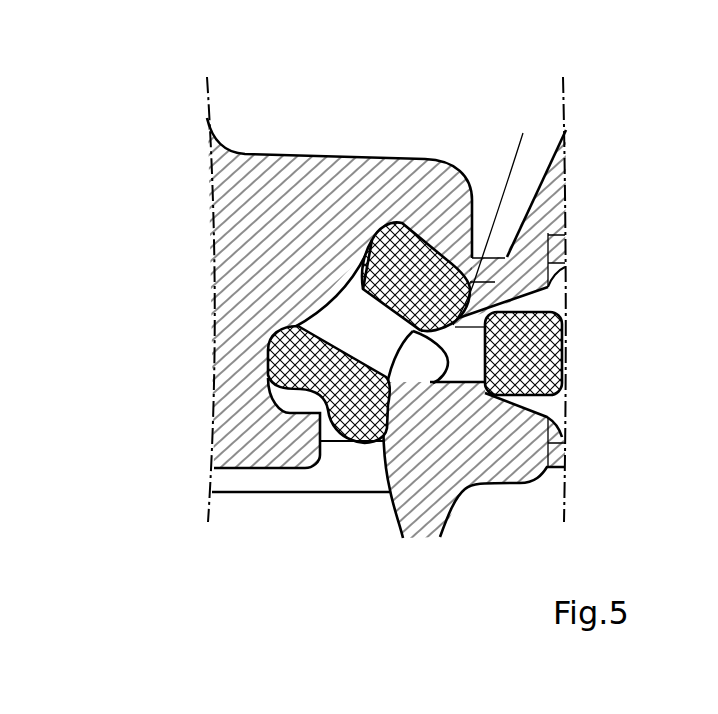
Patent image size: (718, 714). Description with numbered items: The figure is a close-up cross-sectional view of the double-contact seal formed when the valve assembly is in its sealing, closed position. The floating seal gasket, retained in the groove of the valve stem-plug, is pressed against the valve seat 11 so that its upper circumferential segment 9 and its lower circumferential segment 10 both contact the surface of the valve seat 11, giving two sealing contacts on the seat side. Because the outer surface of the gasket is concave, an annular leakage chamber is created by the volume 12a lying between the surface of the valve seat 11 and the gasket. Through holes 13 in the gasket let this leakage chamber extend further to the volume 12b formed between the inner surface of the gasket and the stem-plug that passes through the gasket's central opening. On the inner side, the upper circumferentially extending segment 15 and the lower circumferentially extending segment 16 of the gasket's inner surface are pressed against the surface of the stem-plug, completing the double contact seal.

The upper circumferential segment 9 is at (490, 215).
The lower circumferential segment 10 is at (352, 445).
The valve seat 11 is at (545, 207).
The volume between valve seat surface and gasket 12a is at (408, 372).
The volume between gasket inner surface and stem-plug 12b is at (334, 308).
The through holes 13 is at (362, 328).
The upper circumferentially extending segment 15 is at (397, 223).
The lower circumferentially extending segment 16 is at (268, 364).